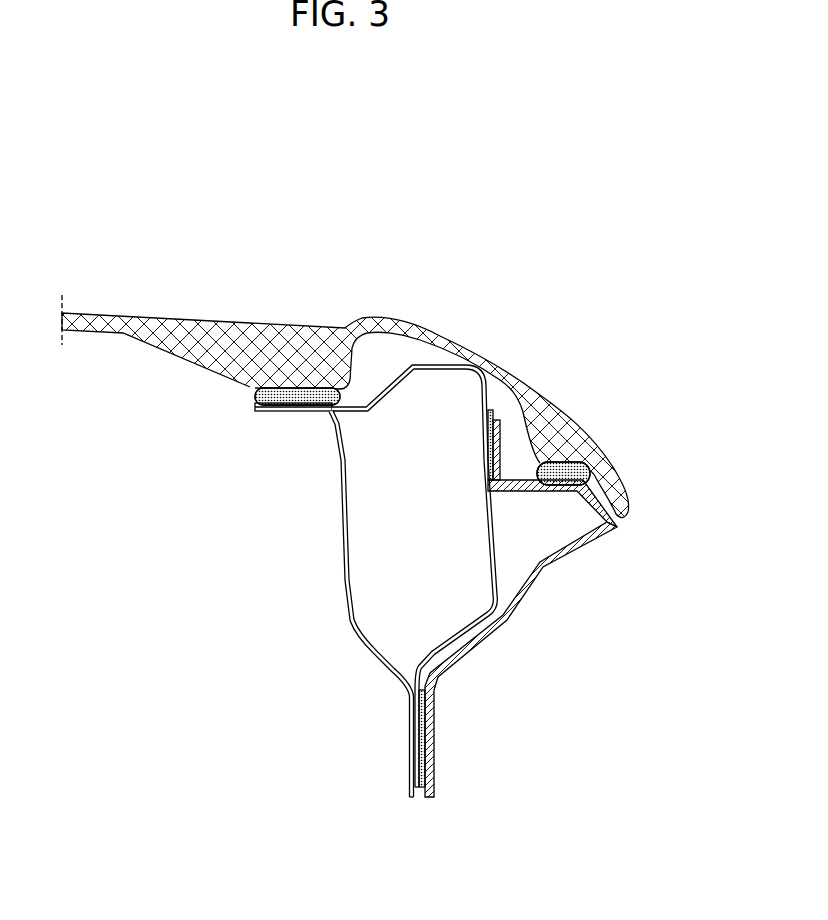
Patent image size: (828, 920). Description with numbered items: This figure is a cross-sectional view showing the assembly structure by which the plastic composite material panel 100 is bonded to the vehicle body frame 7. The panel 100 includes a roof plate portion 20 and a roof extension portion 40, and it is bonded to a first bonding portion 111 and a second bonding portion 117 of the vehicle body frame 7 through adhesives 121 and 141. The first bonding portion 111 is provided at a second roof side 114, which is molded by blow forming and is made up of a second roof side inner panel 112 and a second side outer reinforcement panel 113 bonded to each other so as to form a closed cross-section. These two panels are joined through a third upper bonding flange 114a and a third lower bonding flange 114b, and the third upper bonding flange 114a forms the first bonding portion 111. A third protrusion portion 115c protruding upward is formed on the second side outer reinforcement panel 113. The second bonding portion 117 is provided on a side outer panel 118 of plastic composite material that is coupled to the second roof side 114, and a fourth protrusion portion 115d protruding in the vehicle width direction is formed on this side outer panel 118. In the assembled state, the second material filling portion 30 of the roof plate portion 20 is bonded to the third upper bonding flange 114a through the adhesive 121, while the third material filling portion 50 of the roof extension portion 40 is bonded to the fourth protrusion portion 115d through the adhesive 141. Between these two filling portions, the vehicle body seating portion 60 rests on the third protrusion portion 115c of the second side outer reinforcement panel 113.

The plastic composite material panel 100 is at (352, 158).
The vehicle body frame 7 is at (362, 668).
The roof plate portion 20 is at (187, 318).
The second material filling portion 30 is at (273, 363).
The roof extension portion 40 is at (527, 367).
The third material filling portion 50 is at (570, 452).
The vehicle body seating portion 60 is at (416, 322).
The first bonding portion 111 is at (347, 400).
The second roof side inner panel 112 is at (265, 521).
The second side outer reinforcement panel 113 is at (490, 528).
The second roof side 114 is at (359, 604).
The third upper bonding flange 114a is at (293, 411).
The third lower bonding flange 114b is at (412, 773).
The third protrusion portion 115c is at (446, 365).
The fourth protrusion portion 115d is at (560, 492).
The second bonding portion 117 is at (532, 477).
The side outer panel 118 is at (550, 578).
The adhesive 121 is at (253, 397).
The adhesive 141 is at (600, 470).